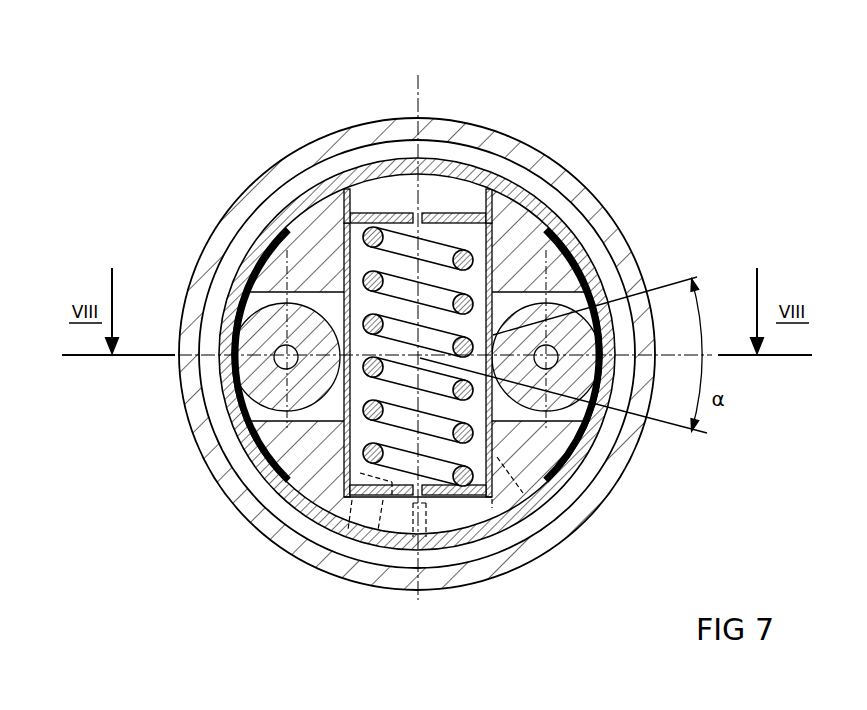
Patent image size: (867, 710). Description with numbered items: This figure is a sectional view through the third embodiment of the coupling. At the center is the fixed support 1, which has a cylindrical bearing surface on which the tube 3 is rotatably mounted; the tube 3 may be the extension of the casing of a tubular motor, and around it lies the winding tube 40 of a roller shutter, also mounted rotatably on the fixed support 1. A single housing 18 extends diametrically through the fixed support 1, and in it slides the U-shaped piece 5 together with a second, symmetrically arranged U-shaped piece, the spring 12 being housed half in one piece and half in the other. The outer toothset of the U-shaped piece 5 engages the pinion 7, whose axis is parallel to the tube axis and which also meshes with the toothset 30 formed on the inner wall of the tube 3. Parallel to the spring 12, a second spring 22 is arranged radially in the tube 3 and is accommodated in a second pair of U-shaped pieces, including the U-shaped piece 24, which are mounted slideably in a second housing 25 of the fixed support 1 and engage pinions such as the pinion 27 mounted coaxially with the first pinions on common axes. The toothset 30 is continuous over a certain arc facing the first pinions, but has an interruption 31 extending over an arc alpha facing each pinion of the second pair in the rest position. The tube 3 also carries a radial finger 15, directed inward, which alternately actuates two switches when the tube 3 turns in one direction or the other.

The fixed support 1 is at (540, 450).
The tube 3 is at (528, 512).
The U-shaped piece 5 is at (366, 476).
The pinion 7 is at (248, 378).
The spring 12 is at (368, 412).
The radial finger 15 is at (415, 516).
The single housing 18 is at (375, 198).
The second spring 22 is at (470, 255).
The U-shaped piece 24 is at (495, 275).
The second housing 25 is at (453, 190).
The pinion 27 is at (422, 357).
The toothset 30 is at (252, 233).
The interruption 31 is at (612, 440).
The winding tube 40 is at (442, 128).